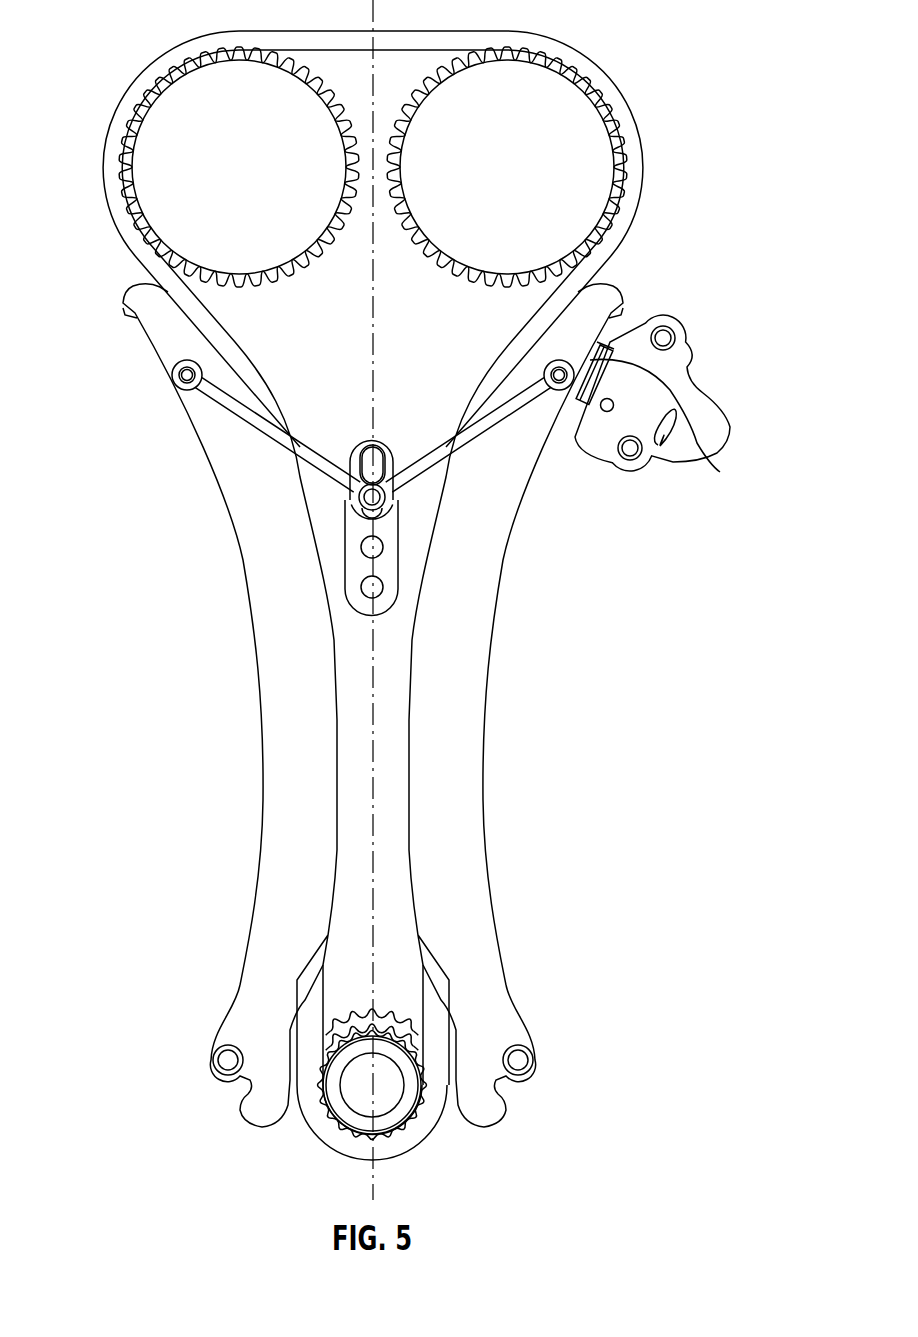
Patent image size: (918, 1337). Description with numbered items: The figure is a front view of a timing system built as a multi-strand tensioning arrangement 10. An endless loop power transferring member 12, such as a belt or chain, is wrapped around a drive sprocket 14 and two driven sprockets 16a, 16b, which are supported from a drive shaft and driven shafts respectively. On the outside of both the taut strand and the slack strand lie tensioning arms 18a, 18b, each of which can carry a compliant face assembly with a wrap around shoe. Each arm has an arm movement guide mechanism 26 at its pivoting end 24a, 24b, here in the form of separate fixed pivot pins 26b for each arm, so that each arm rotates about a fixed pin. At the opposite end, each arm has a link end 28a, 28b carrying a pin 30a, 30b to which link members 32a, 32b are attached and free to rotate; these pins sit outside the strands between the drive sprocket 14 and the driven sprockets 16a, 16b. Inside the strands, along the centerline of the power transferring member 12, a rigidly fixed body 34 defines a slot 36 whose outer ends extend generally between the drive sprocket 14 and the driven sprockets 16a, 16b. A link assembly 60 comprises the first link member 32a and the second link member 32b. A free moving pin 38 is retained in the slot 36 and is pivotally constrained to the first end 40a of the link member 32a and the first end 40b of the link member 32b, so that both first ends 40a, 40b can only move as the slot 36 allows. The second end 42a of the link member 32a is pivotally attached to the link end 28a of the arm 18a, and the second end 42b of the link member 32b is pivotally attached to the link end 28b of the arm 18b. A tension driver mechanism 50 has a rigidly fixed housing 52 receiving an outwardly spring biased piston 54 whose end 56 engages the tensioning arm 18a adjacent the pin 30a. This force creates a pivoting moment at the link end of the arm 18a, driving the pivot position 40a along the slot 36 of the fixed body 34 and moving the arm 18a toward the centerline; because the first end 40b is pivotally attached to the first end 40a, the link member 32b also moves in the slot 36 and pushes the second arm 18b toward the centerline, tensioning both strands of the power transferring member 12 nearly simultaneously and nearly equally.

The multi-strand tensioning arrangement 10 is at (108, 43).
The endless loop power transferring member 12 is at (121, 100).
The drive sprocket 14 is at (367, 1103).
The driven sprocket 16a is at (168, 168).
The driven sprocket 16b is at (570, 120).
The tensioning arm 18a is at (484, 727).
The tensioning arm 18b is at (230, 634).
The pivoting end 24a is at (512, 1028).
The pivoting end 24b is at (235, 1028).
The arm movement guide mechanism 26 is at (198, 1049).
The fixed pivot pin 26b is at (212, 1068).
The link end 28a is at (562, 362).
The link end 28b is at (172, 368).
The pin 30a is at (520, 290).
The pin 30b is at (173, 378).
The first link member 32a is at (499, 383).
The second link member 32b is at (247, 383).
The fixed body 34 is at (373, 622).
The slot 36 is at (372, 484).
The free moving pin 38 is at (376, 512).
The first end 40a is at (391, 497).
The first end 40b is at (355, 497).
The second end 42a is at (592, 287).
The second end 42b is at (185, 390).
The tension driver mechanism 50 is at (678, 405).
The fixed housing 52 is at (729, 412).
The piston 54 is at (720, 472).
The end 56 is at (580, 395).
The link assembly 60 is at (330, 535).